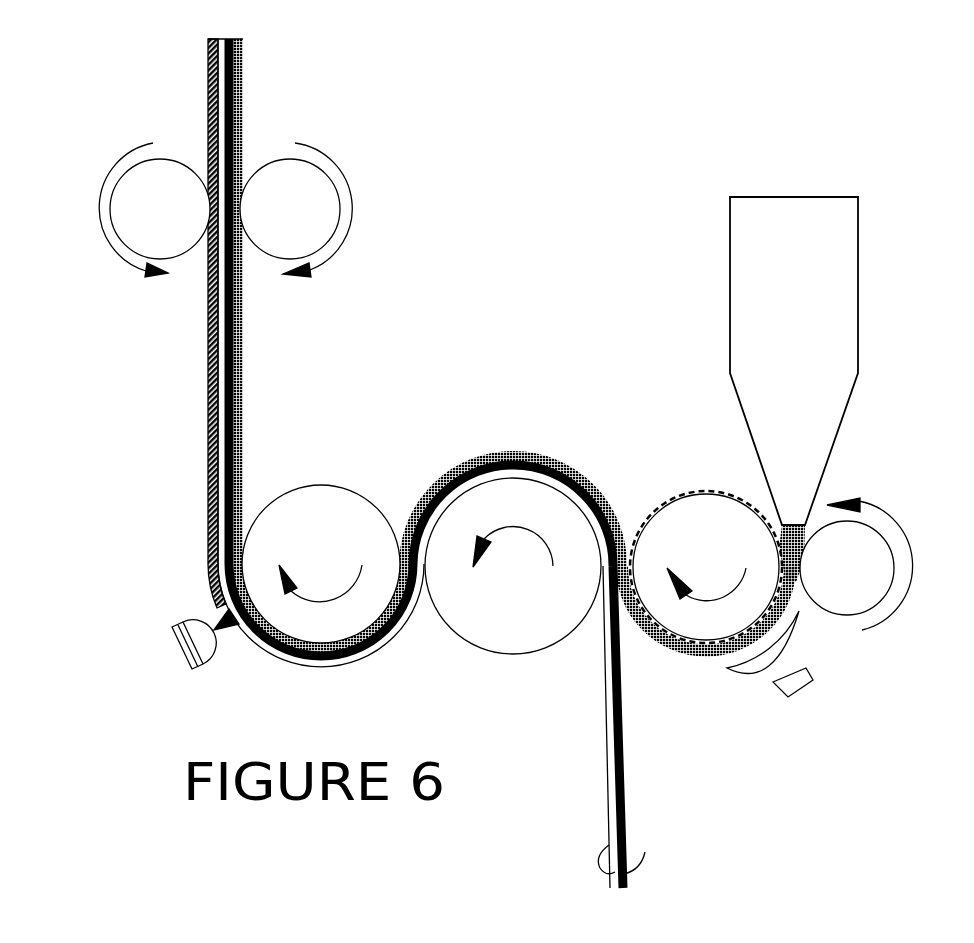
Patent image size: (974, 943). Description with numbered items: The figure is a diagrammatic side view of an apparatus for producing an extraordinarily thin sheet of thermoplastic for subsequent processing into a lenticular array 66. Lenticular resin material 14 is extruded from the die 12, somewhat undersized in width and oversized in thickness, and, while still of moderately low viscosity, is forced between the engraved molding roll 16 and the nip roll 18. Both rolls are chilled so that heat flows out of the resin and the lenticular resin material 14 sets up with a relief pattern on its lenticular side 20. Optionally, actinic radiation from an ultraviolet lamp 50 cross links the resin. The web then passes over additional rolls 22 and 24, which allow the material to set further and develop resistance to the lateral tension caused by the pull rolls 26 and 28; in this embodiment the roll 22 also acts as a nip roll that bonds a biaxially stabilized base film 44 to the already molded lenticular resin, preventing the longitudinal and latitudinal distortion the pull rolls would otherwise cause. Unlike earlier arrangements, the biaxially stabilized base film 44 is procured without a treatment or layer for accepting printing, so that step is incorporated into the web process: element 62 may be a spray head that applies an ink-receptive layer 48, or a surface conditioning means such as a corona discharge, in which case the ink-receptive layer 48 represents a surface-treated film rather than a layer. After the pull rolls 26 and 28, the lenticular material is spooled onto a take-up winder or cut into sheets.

The die 12 is at (793, 305).
The lenticular resin material 14 is at (672, 648).
The engraved molding roll 16 is at (706, 567).
The nip roll 18 is at (847, 568).
The lenticular side 20 is at (242, 375).
The roll 22 is at (513, 566).
The roll 24 is at (321, 564).
The pull roll 26 is at (290, 209).
The pull roll 28 is at (160, 209).
The biaxially stabilized base film 44 is at (622, 833).
The ink-receptive layer 48 is at (208, 343).
The ultraviolet lamp 50 is at (797, 688).
The spray head 62 is at (176, 654).
The lenticular array 66 is at (535, 249).